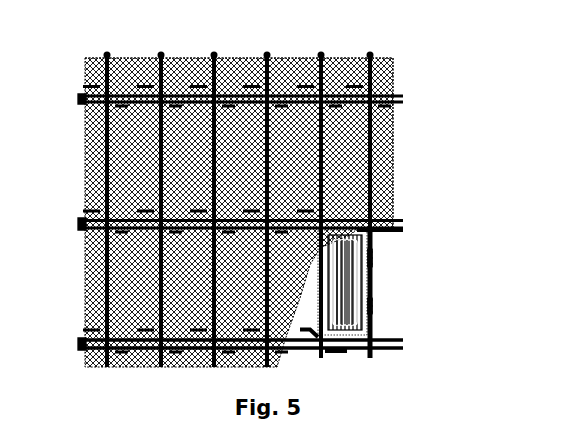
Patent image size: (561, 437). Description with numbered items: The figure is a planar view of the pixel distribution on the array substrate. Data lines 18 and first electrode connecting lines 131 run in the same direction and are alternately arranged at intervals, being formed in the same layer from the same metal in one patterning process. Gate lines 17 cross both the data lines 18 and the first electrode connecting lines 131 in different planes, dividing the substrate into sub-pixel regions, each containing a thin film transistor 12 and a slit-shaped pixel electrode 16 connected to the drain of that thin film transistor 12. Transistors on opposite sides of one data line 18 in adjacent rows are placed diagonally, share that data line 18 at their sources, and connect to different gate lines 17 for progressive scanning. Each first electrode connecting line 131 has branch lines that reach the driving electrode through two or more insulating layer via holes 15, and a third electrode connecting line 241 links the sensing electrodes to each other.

The thin film transistor 12 is at (233, 105).
The first electrode connecting line 131 is at (270, 56).
The data line 18 is at (326, 58).
The insulating layer via hole 15 is at (373, 183).
The third electrode connecting line 241 is at (405, 228).
The pixel electrode 16 is at (360, 287).
The gate line 17 is at (404, 342).